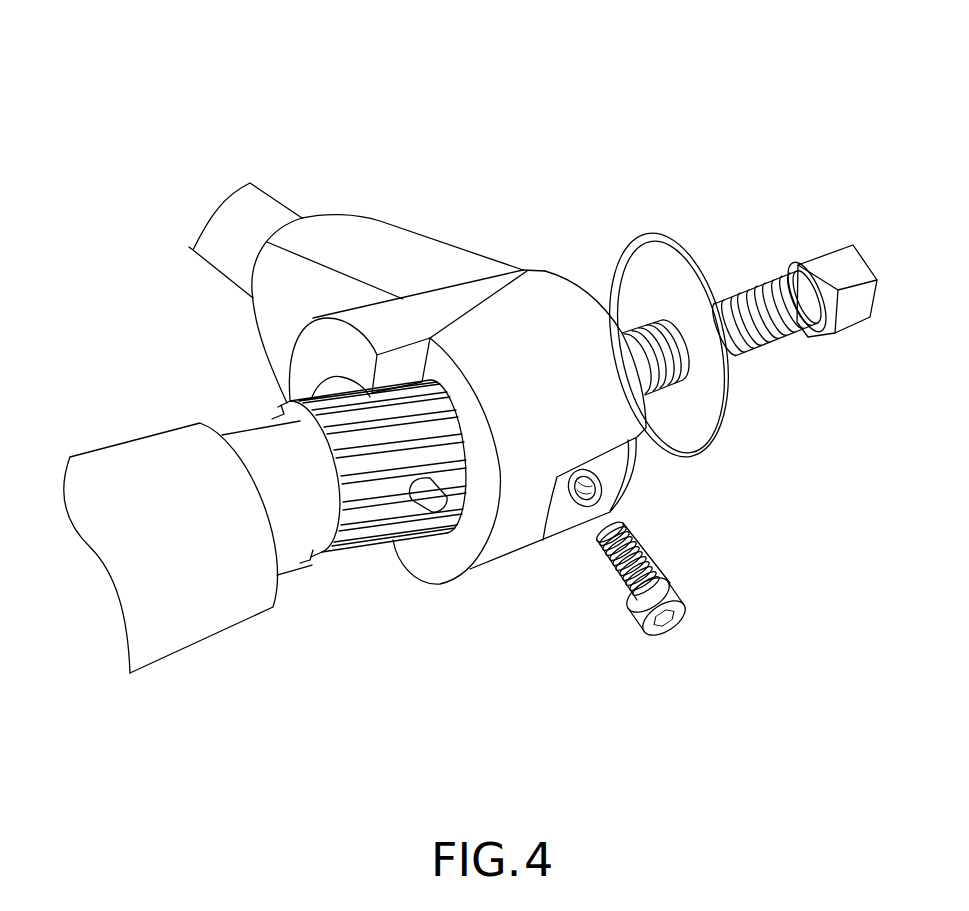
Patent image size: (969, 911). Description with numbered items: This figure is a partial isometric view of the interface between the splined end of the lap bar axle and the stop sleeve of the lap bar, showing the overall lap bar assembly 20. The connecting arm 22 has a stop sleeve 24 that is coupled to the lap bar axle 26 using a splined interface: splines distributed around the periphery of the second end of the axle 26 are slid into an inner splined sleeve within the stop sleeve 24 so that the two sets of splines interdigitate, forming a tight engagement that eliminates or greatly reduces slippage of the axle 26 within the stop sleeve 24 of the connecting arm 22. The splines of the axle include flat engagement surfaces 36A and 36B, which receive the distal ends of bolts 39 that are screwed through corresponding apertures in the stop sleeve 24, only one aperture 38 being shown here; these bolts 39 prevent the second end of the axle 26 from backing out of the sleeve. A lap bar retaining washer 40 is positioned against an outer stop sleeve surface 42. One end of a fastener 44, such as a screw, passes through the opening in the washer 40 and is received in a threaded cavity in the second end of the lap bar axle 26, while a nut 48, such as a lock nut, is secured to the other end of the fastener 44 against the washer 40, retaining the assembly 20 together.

The lap bar assembly 20 is at (590, 680).
The connecting arm 22 is at (262, 218).
The stop sleeve 24 is at (515, 528).
The lap bar axle 26 is at (292, 542).
The flat engagement surface 36A is at (445, 513).
The flat engagement surface 36B is at (360, 397).
The aperture 38 is at (600, 493).
The bolt 39 is at (653, 570).
The lap bar retaining washer 40 is at (624, 243).
The outer stop sleeve surface 42 is at (552, 270).
The fastener 44 is at (767, 277).
The nut 48 is at (840, 240).